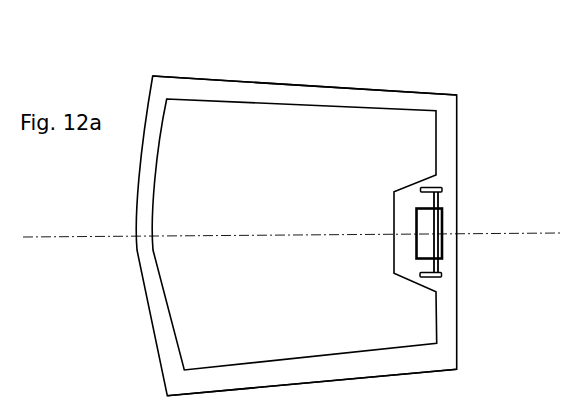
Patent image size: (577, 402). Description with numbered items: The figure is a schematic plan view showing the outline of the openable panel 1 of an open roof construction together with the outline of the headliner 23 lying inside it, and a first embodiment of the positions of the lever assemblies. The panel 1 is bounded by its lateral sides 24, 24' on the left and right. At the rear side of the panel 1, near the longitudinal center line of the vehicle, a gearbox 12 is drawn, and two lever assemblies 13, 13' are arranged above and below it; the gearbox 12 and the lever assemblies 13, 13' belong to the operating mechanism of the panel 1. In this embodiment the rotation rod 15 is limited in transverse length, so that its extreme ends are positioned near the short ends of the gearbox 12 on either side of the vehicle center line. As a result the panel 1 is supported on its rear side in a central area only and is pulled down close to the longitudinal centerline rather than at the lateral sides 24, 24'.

The openable panel 1 is at (300, 82).
The lateral side of the panel 24' is at (305, 73).
The lateral side of the panel 24 is at (336, 377).
The outline of the headliner 23 is at (441, 132).
The lever assembly 13' is at (477, 172).
The gearbox 12 is at (444, 212).
The rotation rod 15 is at (445, 247).
The lever assembly 13 is at (475, 283).